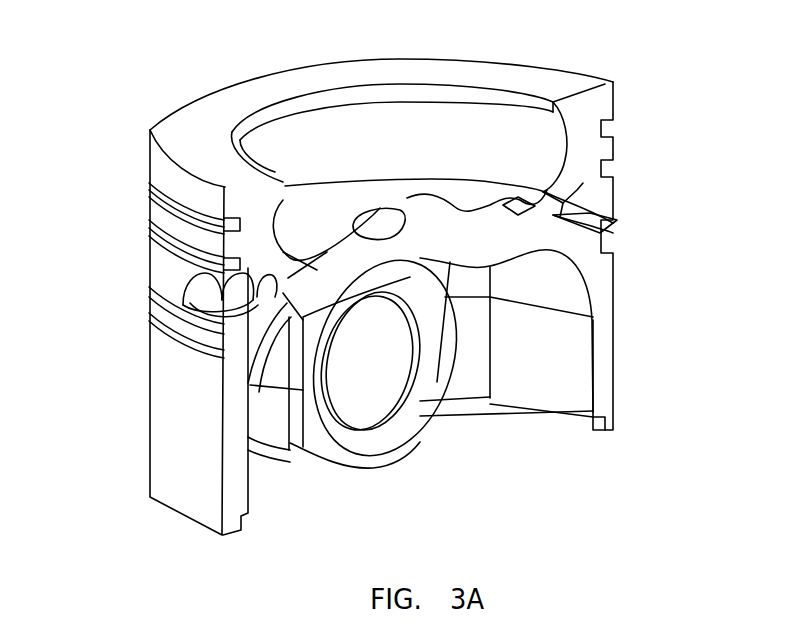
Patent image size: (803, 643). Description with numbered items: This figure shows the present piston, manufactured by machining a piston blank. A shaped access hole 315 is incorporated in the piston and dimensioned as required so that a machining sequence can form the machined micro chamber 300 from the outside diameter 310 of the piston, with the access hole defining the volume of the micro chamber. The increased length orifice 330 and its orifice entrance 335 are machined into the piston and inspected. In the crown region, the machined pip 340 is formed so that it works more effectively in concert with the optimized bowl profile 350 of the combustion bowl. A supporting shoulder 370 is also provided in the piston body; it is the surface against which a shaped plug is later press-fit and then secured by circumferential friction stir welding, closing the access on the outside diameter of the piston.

The machined micro chamber 300 is at (266, 291).
The outside diameter 310 is at (147, 257).
The access hole 315 is at (200, 302).
The increased length orifice 330 is at (537, 213).
The orifice entrance 335 is at (322, 254).
The machined pip 340 is at (396, 197).
The optimized bowl profile 350 is at (532, 150).
The supporting shoulder 370 is at (585, 185).